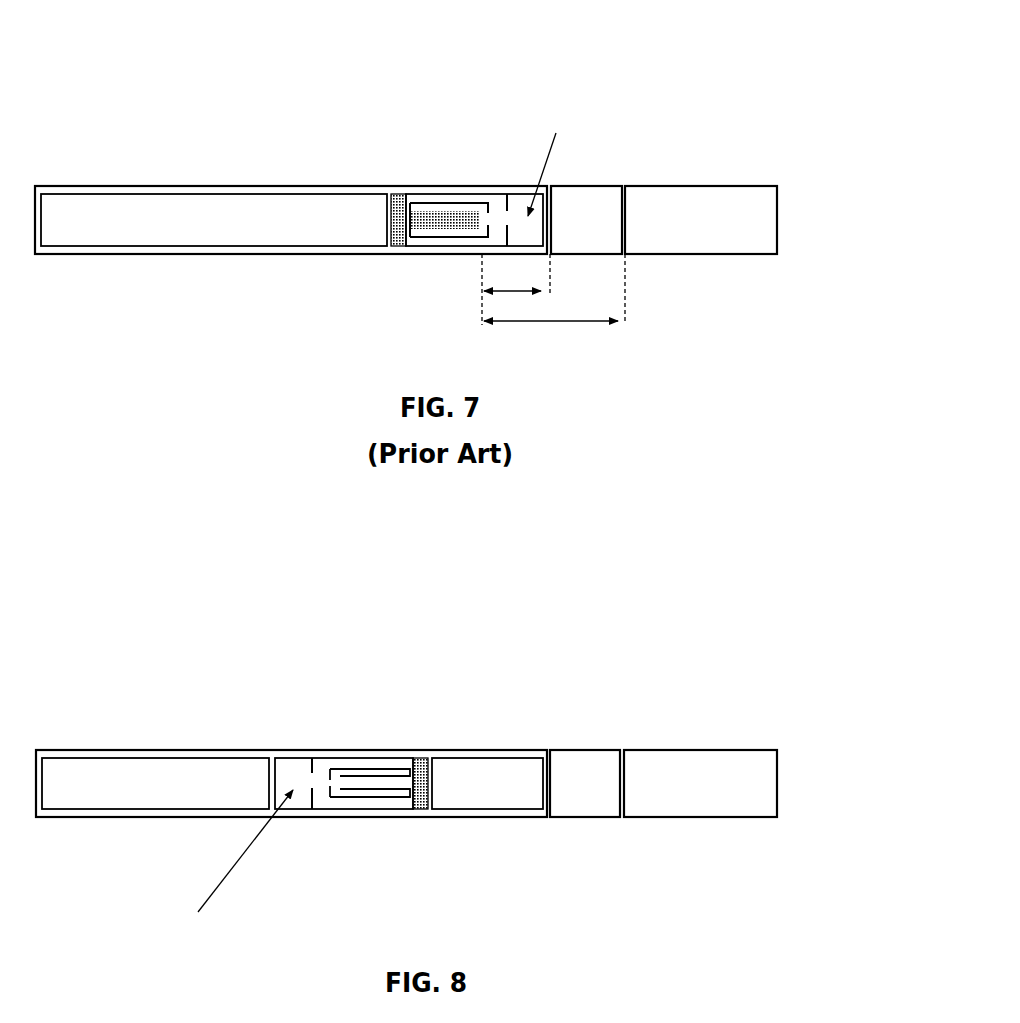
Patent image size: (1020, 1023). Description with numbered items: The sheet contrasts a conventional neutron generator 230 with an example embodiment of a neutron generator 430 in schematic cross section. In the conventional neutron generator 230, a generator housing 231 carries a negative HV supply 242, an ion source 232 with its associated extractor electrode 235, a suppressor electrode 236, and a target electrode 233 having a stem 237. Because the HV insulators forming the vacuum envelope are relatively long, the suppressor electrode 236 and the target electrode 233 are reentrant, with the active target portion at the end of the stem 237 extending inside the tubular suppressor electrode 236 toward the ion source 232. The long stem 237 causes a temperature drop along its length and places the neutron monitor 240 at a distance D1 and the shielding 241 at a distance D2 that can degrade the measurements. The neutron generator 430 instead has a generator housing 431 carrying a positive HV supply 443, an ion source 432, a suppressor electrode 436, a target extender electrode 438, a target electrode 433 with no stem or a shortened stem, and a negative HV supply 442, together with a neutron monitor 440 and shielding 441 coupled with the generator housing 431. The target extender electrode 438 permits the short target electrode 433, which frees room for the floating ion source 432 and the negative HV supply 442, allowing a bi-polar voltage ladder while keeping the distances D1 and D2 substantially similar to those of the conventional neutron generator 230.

In FIG. 7, the conventional neutron generator 230 is at (445, 179).
In FIG. 7, the generator housing 231 is at (247, 252).
In FIG. 7, the ion source 232 is at (556, 164).
In FIG. 7, the target electrode 233 is at (398, 195).
In FIG. 7, the extractor electrode 235 is at (507, 195).
In FIG. 7, the suppressor electrode 236 is at (430, 203).
In FIG. 7, the stem 237 is at (469, 220).
In FIG. 7, the neutron monitor 240 is at (604, 186).
In FIG. 7, the shielding 241 is at (752, 185).
In FIG. 7, the negative high voltage supply 242 is at (175, 196).
In FIG. 8, the neutron generator 430 is at (441, 777).
In FIG. 8, the generator housing 431 is at (218, 817).
In FIG. 8, the ion source 432 is at (230, 869).
In FIG. 8, the target electrode 433 is at (421, 765).
In FIG. 8, the suppressor electrode 436 is at (330, 770).
In FIG. 8, the target extender electrode 438 is at (405, 797).
In FIG. 8, the neutron monitor 440 is at (587, 750).
In FIG. 8, the shielding 441 is at (753, 750).
In FIG. 8, the negative high voltage supply 442 is at (476, 768).
In FIG. 8, the positive high voltage supply 443 is at (150, 760).